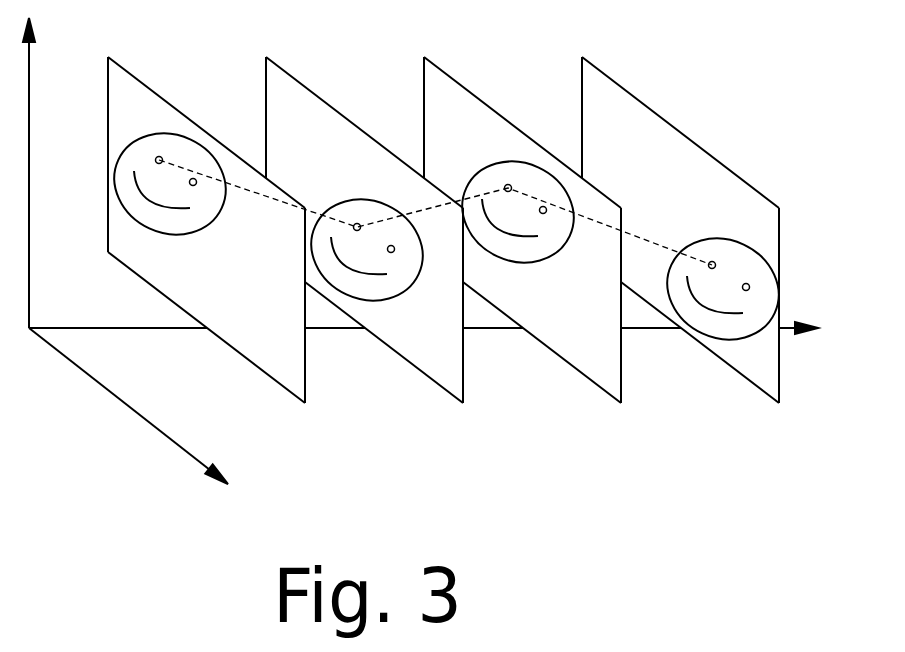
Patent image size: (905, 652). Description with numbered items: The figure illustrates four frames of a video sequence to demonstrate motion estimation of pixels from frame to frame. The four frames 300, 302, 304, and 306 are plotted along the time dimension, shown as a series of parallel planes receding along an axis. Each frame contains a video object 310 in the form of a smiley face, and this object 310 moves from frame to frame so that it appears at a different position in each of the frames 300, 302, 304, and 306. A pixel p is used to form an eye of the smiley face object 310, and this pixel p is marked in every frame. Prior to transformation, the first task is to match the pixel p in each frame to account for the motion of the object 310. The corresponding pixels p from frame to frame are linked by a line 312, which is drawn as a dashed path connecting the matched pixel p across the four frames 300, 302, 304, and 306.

The frame 300 is at (305, 403).
The frame 302 is at (463, 403).
The frame 304 is at (621, 403).
The frame 306 is at (779, 403).
The video object 310 is at (186, 234).
The line 312 is at (423, 206).
The pixel p is at (157, 157).